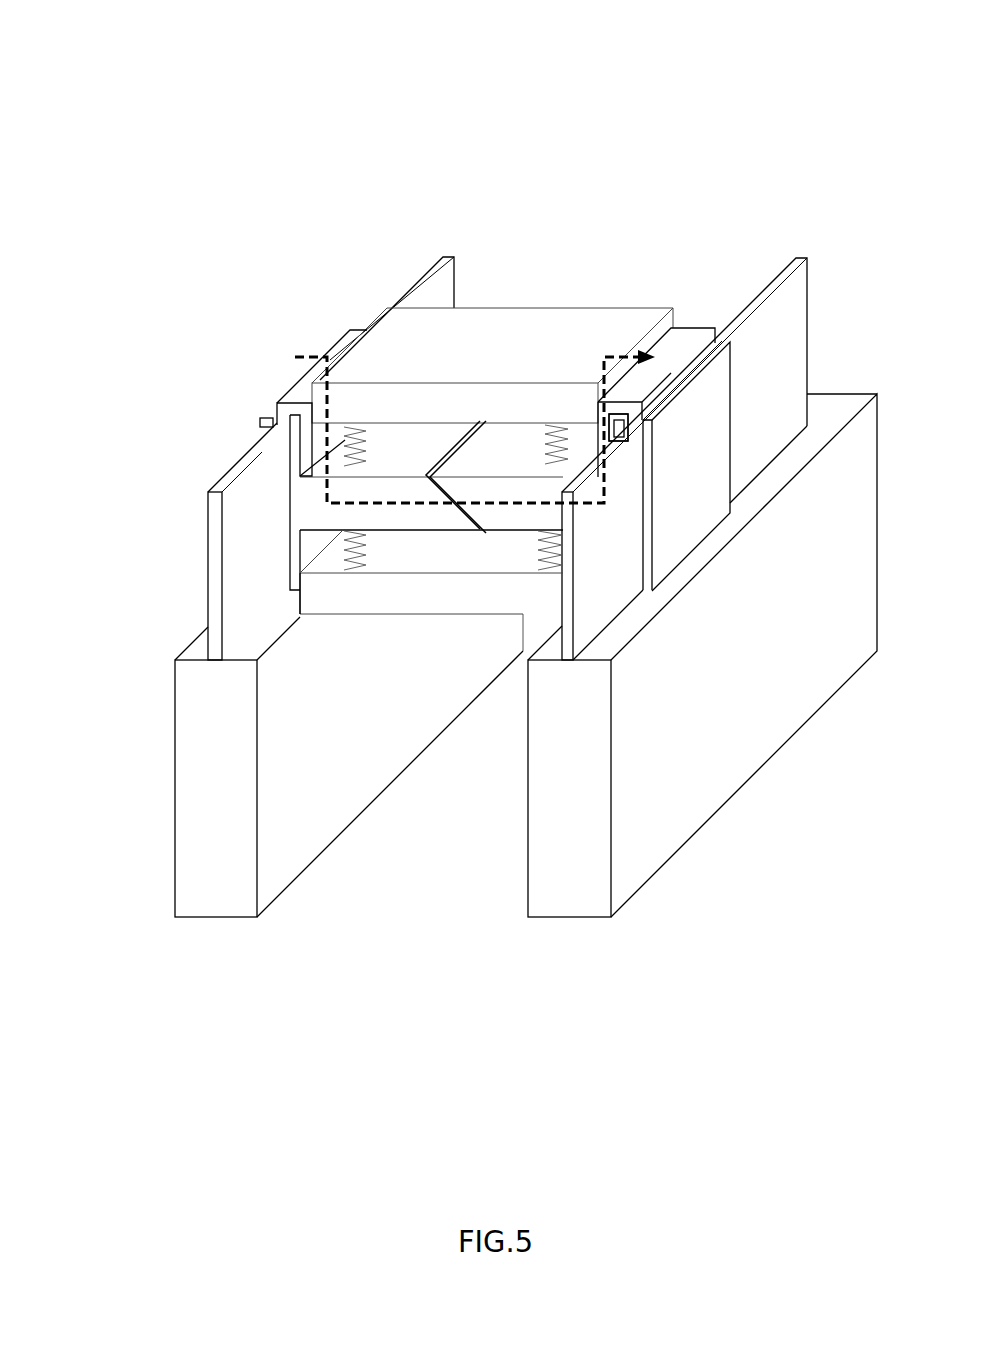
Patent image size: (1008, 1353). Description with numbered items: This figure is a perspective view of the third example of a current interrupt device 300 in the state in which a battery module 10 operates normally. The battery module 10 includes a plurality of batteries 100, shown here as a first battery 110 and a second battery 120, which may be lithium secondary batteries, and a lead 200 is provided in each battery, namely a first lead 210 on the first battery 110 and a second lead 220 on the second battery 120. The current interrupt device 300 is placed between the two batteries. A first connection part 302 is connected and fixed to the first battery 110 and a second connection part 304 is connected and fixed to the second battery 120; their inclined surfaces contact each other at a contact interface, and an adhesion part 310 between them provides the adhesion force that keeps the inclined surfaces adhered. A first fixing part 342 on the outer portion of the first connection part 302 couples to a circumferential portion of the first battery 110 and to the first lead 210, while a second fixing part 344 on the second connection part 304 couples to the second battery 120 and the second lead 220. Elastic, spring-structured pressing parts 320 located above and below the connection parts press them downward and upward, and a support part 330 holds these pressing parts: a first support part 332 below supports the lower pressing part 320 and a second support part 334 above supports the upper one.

The battery module 10 is at (634, 96).
The plurality of batteries 100 is at (568, 988).
The first battery 110 is at (215, 920).
The second battery 120 is at (568, 920).
The lead 200 is at (800, 185).
The first lead 210 is at (446, 257).
The second lead 220 is at (798, 257).
The current interrupt device 300 is at (525, 332).
The first connection part 302 is at (395, 525).
The second connection part 304 is at (502, 515).
The adhesion part 310 is at (467, 515).
The pressing part 320 is at (343, 442).
The support part 330 is at (112, 422).
The first support part 332 is at (330, 603).
The second support part 334 is at (350, 417).
The first fixing part 342 is at (297, 548).
The second fixing part 344 is at (617, 430).